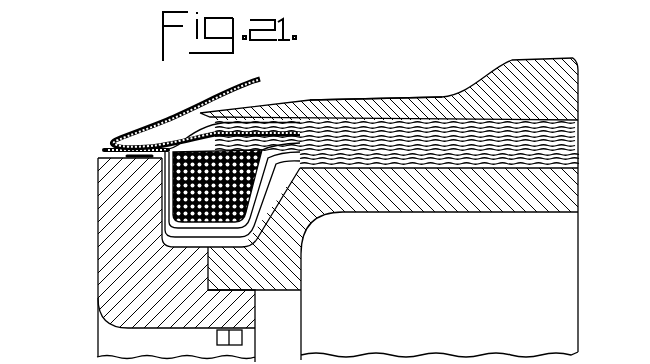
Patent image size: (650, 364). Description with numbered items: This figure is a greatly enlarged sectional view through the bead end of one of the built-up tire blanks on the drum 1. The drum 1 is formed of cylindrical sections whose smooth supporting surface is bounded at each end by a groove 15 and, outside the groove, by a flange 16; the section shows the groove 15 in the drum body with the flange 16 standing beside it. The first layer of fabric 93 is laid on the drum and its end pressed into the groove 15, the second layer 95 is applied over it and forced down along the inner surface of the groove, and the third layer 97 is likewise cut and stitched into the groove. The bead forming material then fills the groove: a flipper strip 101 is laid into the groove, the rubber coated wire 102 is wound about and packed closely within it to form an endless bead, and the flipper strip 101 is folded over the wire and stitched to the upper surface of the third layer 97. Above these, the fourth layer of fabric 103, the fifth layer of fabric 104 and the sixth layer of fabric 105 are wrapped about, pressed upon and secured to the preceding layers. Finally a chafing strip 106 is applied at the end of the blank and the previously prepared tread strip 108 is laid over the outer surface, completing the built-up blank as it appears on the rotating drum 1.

The drum 1 is at (97, 227).
The groove 15 is at (225, 247).
The flange 16 is at (97, 177).
The first layer of fabric 93 is at (388, 158).
The second layer 95 is at (432, 163).
The third layer 97 is at (492, 160).
The flipper strip 101 is at (262, 162).
The rubber coated wire 102 is at (165, 221).
The fourth layer of fabric 103 is at (328, 127).
The fifth layer of fabric 104 is at (373, 112).
The sixth layer of fabric 105 is at (420, 112).
The chafing strip 106 is at (172, 104).
The tread strip 108 is at (537, 62).